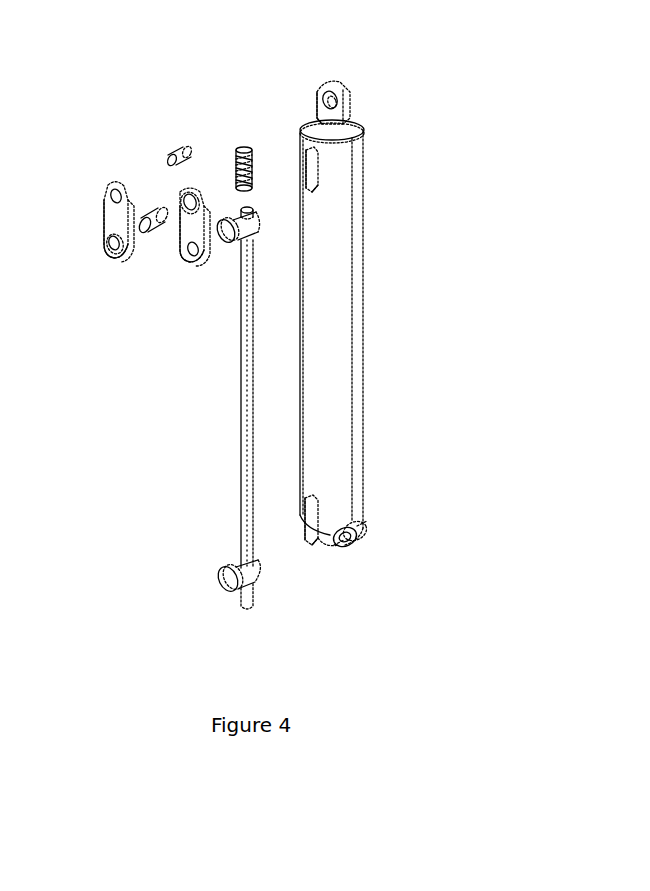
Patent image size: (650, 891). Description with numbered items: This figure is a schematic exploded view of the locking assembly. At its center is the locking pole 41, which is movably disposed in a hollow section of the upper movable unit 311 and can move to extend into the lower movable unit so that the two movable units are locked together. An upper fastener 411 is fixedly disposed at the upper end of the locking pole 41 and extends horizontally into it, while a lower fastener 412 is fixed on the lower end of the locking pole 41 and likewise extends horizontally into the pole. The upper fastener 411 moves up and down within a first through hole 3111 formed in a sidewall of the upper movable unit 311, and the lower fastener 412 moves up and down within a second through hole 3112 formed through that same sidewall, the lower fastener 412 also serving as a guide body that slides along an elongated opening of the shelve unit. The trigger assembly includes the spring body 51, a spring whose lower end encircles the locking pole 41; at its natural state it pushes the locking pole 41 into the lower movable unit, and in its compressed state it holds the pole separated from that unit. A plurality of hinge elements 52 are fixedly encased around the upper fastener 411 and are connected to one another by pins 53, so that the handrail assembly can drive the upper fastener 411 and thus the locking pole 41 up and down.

The upper movable unit 311 is at (333, 362).
The first through hole 3111 is at (300, 140).
The second through hole 3112 is at (320, 548).
The locking pole 41 is at (250, 443).
The upper fastener 411 is at (227, 233).
The lower fastener 412 is at (225, 583).
The spring body 51 is at (228, 145).
The hinge elements 52 is at (192, 233).
The pins 53 is at (148, 207).